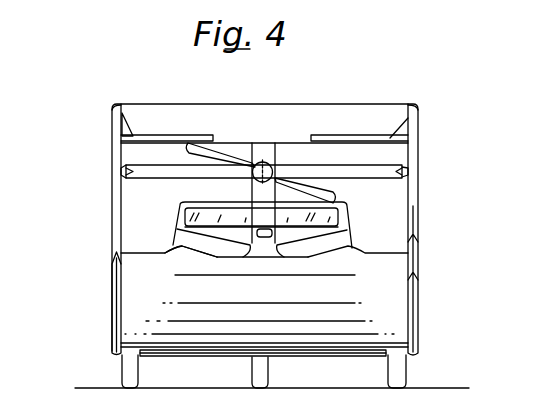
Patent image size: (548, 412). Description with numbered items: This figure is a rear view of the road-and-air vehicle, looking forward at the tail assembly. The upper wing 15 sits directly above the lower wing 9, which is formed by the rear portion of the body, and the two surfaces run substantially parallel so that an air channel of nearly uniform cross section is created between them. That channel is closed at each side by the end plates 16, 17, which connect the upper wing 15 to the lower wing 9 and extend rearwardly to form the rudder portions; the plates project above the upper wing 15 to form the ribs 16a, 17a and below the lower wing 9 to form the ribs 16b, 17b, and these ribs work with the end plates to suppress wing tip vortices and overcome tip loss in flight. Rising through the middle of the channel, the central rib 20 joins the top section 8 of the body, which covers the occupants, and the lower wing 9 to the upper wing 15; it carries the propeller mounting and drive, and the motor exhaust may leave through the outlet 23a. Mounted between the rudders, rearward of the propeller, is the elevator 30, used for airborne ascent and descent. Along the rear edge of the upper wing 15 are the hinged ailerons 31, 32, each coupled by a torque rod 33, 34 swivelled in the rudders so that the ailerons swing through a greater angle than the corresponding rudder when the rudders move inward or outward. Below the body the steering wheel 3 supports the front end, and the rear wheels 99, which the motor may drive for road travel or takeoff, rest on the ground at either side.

The steering wheel 3 is at (252, 369).
The top section 8 is at (211, 203).
The lower wing 9 is at (160, 249).
The upper wing 15 is at (222, 104).
The end plate 16 is at (112, 183).
The rib 16a is at (123, 129).
The rib 16b is at (110, 289).
The end plate 17 is at (420, 173).
The rib 17a is at (419, 126).
The rib 17b is at (421, 311).
The central rib 20 is at (275, 156).
The outlet 23a is at (275, 232).
The elevator 30 is at (148, 179).
The aileron 31 is at (155, 144).
The aileron 32 is at (328, 139).
The torque rod 33 is at (130, 122).
The torque rod 34 is at (407, 122).
The rear wheels 99 is at (122, 369).